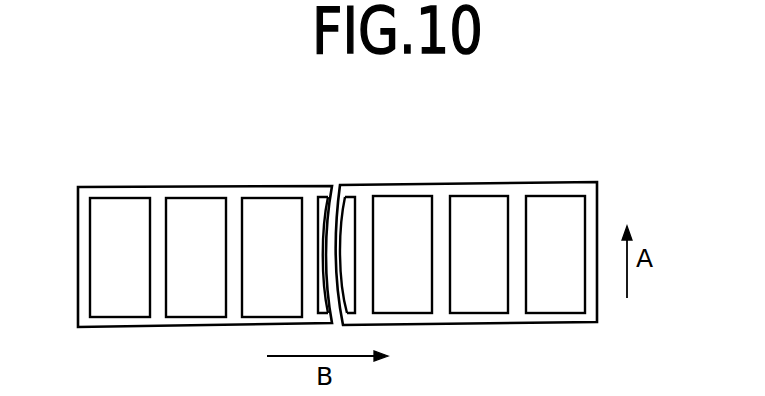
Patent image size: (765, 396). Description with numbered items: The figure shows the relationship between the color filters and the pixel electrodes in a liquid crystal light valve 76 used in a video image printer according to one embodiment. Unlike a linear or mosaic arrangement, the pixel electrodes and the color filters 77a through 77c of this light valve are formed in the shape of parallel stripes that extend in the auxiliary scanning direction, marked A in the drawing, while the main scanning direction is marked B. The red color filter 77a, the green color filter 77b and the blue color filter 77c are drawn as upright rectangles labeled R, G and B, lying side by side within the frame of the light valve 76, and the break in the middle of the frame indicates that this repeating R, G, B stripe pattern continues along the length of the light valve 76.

The liquid crystal light valve 76 is at (406, 168).
The color filter 77a is at (116, 203).
The color filter 77b is at (197, 203).
The color filter 77c is at (278, 203).